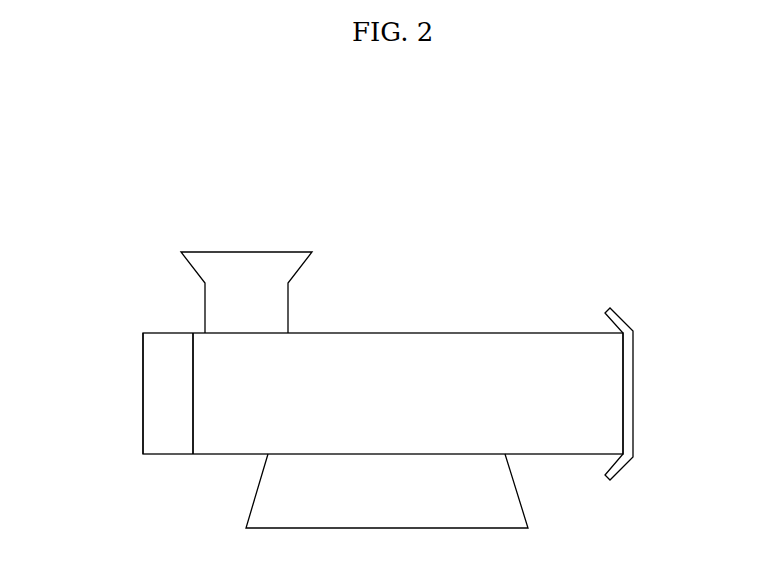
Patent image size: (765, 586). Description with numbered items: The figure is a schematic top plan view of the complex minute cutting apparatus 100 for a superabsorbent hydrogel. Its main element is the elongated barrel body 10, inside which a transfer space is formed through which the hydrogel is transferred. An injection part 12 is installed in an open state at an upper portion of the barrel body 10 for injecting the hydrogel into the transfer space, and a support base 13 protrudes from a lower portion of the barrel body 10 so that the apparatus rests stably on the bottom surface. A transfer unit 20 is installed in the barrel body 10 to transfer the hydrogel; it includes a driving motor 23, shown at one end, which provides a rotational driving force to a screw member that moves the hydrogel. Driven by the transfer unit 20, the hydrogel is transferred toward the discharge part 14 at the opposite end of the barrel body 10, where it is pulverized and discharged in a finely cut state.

The complex minute cutting apparatus 100 is at (424, 229).
The barrel body 10 is at (465, 345).
The injection part 12 is at (244, 251).
The support base 13 is at (383, 528).
The discharge part 14 is at (635, 389).
The transfer unit 20 is at (133, 390).
The driving motor 23 is at (166, 455).